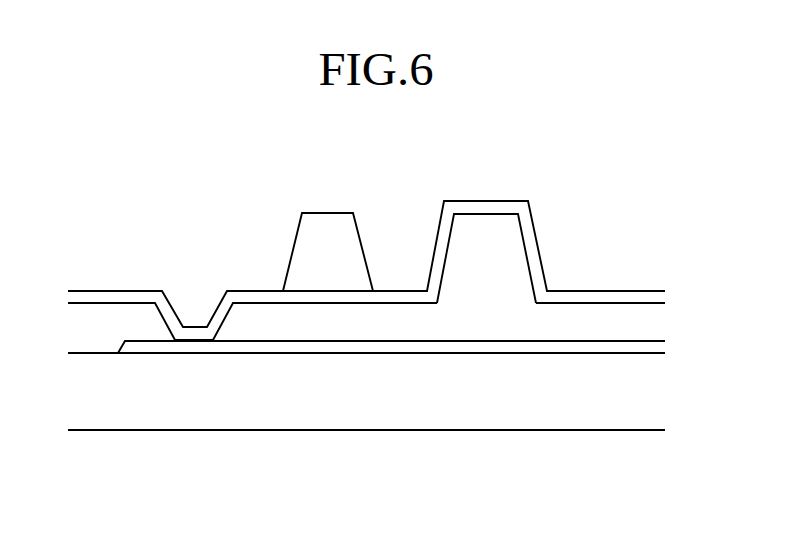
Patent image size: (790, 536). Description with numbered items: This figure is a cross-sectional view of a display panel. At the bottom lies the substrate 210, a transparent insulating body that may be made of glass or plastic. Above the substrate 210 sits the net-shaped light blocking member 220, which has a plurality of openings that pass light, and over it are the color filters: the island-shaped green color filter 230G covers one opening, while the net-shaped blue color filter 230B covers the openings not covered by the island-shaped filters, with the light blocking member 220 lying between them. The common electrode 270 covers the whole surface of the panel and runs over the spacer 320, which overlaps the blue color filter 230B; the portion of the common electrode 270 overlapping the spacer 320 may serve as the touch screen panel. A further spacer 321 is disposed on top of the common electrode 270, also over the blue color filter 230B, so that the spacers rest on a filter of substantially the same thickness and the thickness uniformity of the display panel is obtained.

The substrate 210 is at (292, 402).
The light blocking member 220 is at (377, 347).
The green color filter 230G is at (108, 317).
The blue color filter 230B is at (245, 317).
The common electrode 270 is at (398, 297).
The spacer 320 is at (485, 228).
The spacer 321 is at (327, 237).